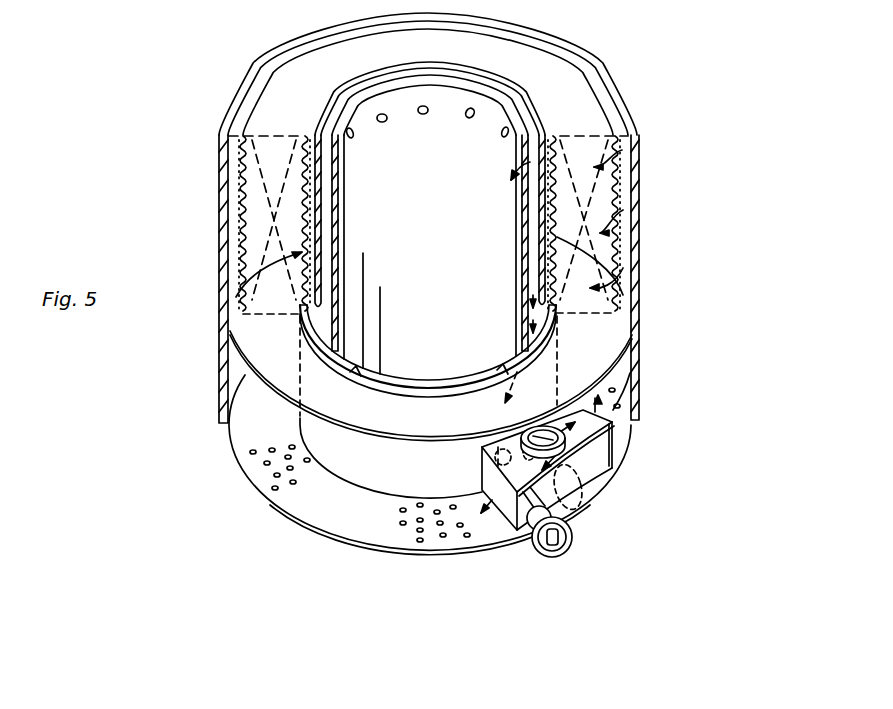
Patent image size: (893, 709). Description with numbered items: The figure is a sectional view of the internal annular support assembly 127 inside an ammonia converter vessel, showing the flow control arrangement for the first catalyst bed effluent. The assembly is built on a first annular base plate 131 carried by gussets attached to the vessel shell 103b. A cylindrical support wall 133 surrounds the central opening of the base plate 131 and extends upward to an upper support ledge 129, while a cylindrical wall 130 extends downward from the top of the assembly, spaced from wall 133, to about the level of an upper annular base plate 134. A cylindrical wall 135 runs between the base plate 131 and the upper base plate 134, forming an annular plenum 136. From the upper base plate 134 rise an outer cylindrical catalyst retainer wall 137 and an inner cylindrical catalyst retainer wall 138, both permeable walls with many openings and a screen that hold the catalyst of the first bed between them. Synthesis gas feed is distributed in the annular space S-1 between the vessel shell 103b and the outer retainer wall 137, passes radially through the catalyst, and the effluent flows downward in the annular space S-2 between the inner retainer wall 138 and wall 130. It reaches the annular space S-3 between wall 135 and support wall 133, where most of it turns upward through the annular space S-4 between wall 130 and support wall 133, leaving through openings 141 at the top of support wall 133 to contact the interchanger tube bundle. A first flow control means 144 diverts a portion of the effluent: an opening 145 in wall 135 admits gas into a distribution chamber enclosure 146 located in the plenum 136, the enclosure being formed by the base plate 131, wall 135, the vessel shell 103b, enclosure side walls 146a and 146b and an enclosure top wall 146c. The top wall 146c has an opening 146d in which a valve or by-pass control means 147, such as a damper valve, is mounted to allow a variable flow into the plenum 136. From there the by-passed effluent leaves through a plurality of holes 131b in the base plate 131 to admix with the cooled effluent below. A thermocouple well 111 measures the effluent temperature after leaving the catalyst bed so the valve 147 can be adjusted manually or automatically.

The vessel shell 103b is at (641, 187).
The annular support assembly 127 is at (650, 404).
The outer cylindrical catalyst retainer wall 137 is at (236, 192).
The upper support ledge 129 is at (474, 90).
The openings 141 is at (421, 113).
The inner cylindrical catalyst retainer wall 138 is at (322, 241).
The cylindrical support wall 133 is at (336, 217).
The cylindrical wall 130 is at (347, 190).
The annular space S-1 is at (626, 200).
The annular space S-2 is at (542, 222).
The annular space S-3 is at (536, 320).
The annular space S-4 is at (537, 194).
The upper annular base plate 134 is at (236, 338).
The cylindrical wall 135 is at (423, 475).
The annular plenum 136 is at (345, 475).
The first annular base plate 131 is at (250, 431).
The holes 131b is at (266, 463).
The opening 145 is at (498, 440).
The distribution chamber enclosure 146 is at (557, 445).
The first flow control means 144 is at (497, 517).
The enclosure side wall 146b is at (604, 447).
The enclosure top wall 146c is at (584, 442).
The opening 146d is at (563, 472).
The valve or by-pass control means 147 is at (545, 428).
The thermocouple well 111 is at (522, 525).
The enclosure side wall 146a is at (538, 508).